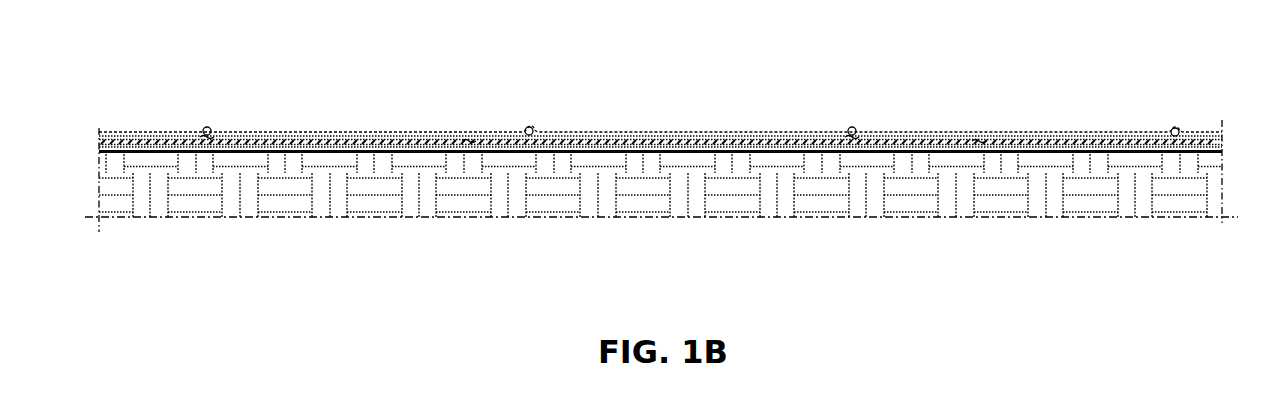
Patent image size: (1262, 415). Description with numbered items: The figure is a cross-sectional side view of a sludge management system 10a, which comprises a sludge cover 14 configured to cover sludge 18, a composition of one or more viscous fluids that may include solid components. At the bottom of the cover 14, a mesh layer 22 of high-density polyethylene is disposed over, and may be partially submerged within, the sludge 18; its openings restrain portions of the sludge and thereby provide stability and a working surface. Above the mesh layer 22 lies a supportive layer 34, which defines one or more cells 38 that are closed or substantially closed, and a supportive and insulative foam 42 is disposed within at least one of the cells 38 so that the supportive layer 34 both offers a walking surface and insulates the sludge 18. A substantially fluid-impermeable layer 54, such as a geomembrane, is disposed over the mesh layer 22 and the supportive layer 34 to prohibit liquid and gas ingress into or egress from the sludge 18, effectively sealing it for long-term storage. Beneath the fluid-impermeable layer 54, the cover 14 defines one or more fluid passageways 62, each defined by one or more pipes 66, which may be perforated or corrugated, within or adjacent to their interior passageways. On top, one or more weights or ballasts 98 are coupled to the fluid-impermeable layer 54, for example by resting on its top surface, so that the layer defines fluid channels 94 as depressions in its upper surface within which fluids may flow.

The sludge management system 10a is at (150, 43).
The sludge cover 14 is at (630, 110).
The sludge 18 is at (160, 203).
The mesh layer 22 is at (297, 153).
The supportive layer 34 is at (372, 140).
The cells 38 is at (433, 146).
The foam 42 is at (493, 140).
The substantially fluid-impermeable layer 54 is at (975, 133).
The fluid passageways 62 is at (529, 127).
The pipes 66 is at (1178, 129).
The fluid channels 94 is at (204, 129).
The weights or ballasts 98 is at (853, 127).